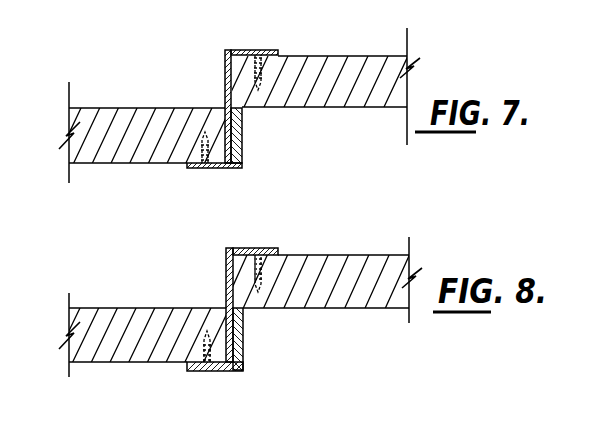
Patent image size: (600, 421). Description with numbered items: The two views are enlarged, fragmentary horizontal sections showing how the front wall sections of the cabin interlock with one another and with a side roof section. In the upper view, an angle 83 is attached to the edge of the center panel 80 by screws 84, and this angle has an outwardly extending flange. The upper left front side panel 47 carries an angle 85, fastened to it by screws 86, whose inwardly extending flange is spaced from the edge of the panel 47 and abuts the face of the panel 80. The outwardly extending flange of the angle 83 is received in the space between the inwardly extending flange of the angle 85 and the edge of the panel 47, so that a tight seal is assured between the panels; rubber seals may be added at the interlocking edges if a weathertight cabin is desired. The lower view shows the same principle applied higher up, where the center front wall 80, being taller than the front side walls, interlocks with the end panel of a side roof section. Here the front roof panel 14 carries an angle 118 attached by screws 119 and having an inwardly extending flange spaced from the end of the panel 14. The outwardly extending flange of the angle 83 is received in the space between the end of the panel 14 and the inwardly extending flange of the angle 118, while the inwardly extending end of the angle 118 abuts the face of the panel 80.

In FIG. 7, the upper left front side panel 47 is at (162, 108).
In FIG. 7, the center panel 80 is at (351, 57).
In FIG. 8, the center panel 80 is at (352, 256).
In FIG. 7, the angle 83 is at (228, 50).
In FIG. 8, the angle 83 is at (232, 248).
In FIG. 7, the screws 84 is at (259, 52).
In FIG. 8, the screws 84 is at (258, 253).
In FIG. 7, the angle 85 is at (242, 143).
In FIG. 7, the screws 86 is at (203, 171).
In FIG. 8, the front roof panel 14 is at (118, 362).
In FIG. 8, the angle 118 is at (244, 361).
In FIG. 8, the screws 119 is at (203, 373).